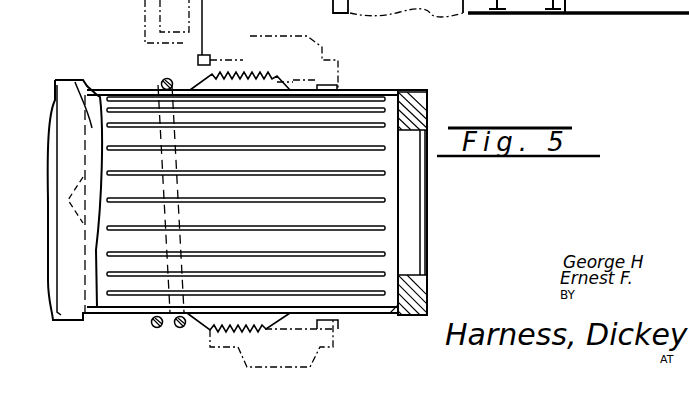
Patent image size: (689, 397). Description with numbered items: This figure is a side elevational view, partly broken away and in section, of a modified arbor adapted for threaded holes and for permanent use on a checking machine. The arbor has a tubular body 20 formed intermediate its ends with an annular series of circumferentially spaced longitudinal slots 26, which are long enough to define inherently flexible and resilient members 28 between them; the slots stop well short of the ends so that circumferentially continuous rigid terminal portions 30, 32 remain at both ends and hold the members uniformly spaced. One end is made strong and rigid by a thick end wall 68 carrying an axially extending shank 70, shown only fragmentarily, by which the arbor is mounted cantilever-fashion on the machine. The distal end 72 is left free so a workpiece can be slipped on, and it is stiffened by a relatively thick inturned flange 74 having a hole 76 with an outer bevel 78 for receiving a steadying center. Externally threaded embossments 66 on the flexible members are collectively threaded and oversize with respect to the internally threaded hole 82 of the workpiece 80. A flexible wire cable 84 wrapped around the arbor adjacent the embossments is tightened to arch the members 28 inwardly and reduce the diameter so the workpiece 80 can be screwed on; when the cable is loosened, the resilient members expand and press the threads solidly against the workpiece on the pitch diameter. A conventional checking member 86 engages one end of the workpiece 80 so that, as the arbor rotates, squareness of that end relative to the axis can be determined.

The tubular body 20 is at (399, 80).
The longitudinal slots 26 is at (367, 100).
The flexible members 28 is at (337, 103).
The rigid terminal portion 30 is at (402, 88).
The rigid terminal portion 32 is at (98, 90).
The externally threaded embossments 66 is at (270, 88).
The thick end wall 68 is at (52, 328).
The shank 70 is at (72, 80).
The distal end 72 is at (427, 100).
The inturned flange 74 is at (417, 117).
The hole 76 is at (410, 203).
The outer bevel 78 is at (425, 237).
The workpiece 80 is at (278, 36).
The internally threaded hole 82 is at (242, 74).
The flexible wire cable 84 is at (165, 78).
The checking member 86 is at (213, 45).